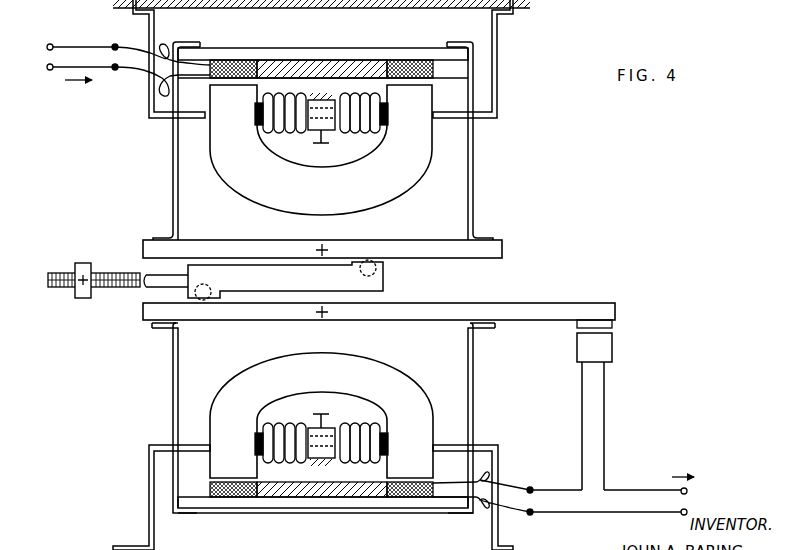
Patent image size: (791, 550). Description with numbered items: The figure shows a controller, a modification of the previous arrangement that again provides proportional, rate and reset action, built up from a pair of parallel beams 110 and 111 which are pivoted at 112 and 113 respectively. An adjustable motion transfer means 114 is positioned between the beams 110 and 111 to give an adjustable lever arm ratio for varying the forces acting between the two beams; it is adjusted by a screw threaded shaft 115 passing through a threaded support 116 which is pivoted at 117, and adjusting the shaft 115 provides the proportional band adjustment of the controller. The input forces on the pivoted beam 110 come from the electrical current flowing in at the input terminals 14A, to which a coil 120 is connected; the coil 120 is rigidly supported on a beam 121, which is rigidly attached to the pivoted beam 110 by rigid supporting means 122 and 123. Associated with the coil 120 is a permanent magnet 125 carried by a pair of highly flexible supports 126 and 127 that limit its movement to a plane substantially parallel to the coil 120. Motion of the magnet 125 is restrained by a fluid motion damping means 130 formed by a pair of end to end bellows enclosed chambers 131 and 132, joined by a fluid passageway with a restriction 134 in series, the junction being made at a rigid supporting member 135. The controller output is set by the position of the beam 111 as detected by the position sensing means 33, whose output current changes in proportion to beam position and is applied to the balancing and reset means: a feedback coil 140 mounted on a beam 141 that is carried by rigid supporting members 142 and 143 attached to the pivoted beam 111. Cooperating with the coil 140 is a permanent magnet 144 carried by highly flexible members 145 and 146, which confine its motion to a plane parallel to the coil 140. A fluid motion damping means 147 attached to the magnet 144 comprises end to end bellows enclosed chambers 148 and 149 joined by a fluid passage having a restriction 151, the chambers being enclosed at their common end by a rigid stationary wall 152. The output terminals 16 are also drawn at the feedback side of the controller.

The input terminals 14A is at (88, 67).
The flexible support 127 is at (148, 34).
The flexible support 126 is at (500, 63).
The rigid supporting means 122 is at (172, 166).
The rigid supporting means 123 is at (477, 166).
The beam 121 is at (338, 50).
The coil 120 is at (398, 65).
The permanent magnet 125 is at (243, 187).
The bellows enclosed chamber 131 is at (280, 95).
The bellows enclosed chamber 132 is at (362, 95).
The rigid supporting member 135 is at (320, 125).
The restriction 134 is at (330, 146).
The fluid motion damping means 130 is at (312, 154).
The beam 110 is at (408, 248).
The pivot 112 is at (330, 247).
The beam 111 is at (413, 316).
The pivot 113 is at (333, 321).
The adjustable motion transfer means 114 is at (388, 279).
The screw threaded shaft 115 is at (101, 292).
The threaded support 116 is at (87, 262).
The pivot 117 is at (78, 292).
The rigid supporting member 143 is at (173, 367).
The rigid supporting member 142 is at (474, 372).
The permanent magnet 144 is at (240, 380).
The feedback coil 140 is at (236, 498).
The beam 141 is at (412, 508).
The bellows enclosed chamber 148 is at (290, 466).
The bellows enclosed chamber 149 is at (365, 466).
The rigid stationary wall 152 is at (328, 440).
The restriction 151 is at (318, 414).
The fluid motion damping means 147 is at (318, 403).
The flexible member 145 is at (148, 481).
The flexible member 146 is at (496, 466).
The position sensing means 33 is at (618, 349).
The output terminals 16 is at (648, 505).